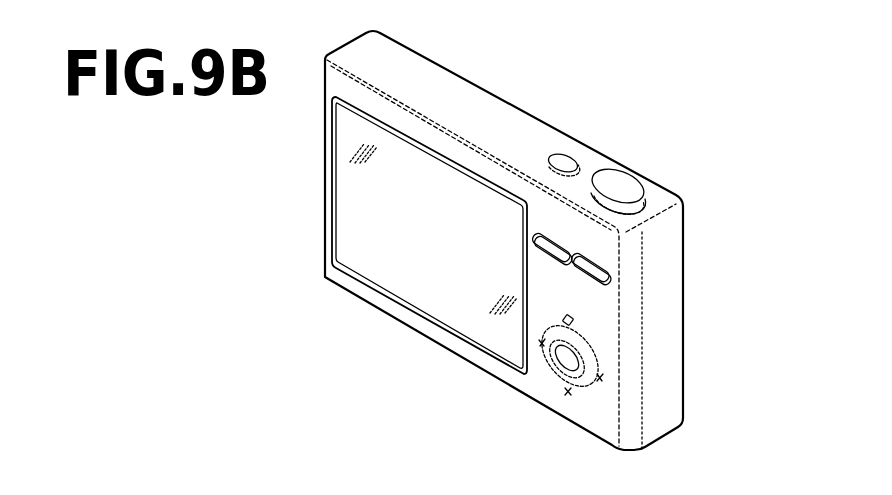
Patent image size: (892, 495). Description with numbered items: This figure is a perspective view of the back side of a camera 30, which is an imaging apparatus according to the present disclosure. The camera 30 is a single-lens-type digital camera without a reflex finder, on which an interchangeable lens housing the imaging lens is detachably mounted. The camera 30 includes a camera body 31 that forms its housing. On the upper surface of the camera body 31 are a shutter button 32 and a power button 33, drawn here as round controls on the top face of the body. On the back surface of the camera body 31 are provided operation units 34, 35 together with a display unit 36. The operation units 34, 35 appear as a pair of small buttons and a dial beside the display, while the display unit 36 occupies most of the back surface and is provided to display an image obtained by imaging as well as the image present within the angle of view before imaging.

The camera 30 is at (281, 163).
The camera body 31 is at (672, 342).
The shutter button 32 is at (625, 185).
The power button 33 is at (565, 160).
The operation unit 34 is at (605, 284).
The operation unit 35 is at (578, 388).
The display unit 36 is at (415, 298).